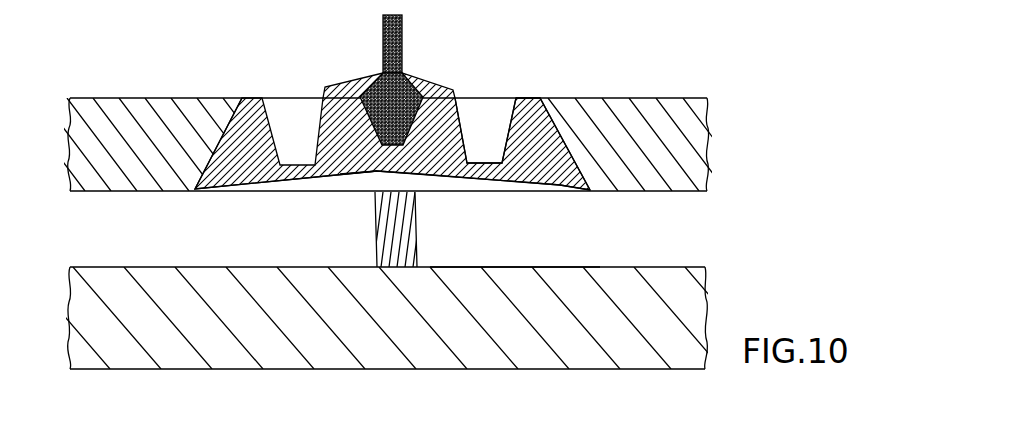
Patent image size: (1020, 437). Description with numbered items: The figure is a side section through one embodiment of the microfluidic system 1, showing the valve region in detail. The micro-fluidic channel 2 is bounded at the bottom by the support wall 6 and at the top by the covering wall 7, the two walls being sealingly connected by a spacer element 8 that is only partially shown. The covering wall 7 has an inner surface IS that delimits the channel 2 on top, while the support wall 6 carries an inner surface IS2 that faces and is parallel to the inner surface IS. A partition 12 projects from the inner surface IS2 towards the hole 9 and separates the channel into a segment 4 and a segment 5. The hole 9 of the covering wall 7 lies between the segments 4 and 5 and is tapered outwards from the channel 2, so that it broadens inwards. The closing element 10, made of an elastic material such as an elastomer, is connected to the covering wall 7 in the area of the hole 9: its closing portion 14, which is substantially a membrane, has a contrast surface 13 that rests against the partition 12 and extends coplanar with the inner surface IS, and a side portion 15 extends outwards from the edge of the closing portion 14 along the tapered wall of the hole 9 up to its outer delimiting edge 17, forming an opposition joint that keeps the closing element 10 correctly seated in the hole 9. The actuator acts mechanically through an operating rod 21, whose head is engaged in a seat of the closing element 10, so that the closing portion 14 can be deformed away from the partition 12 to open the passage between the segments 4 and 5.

The microfluidic system 1 is at (712, 90).
The micro-fluidic channel 2 is at (287, 273).
The segment 4 is at (121, 266).
The segment 5 is at (688, 194).
The support wall 6 is at (643, 362).
The covering wall 7 is at (633, 118).
The spacer element 8 is at (116, 5).
The hole 9 is at (487, 96).
The closing element 10 is at (338, 77).
The partition 12 is at (413, 252).
The contrast surface 13 is at (372, 177).
The closing portion 14 is at (473, 172).
The side portion 15 is at (241, 168).
The outer delimiting edge 17 is at (536, 96).
The operating rod 21 is at (402, 45).
The inner surface IS is at (620, 194).
The inner surface IS2 is at (500, 262).